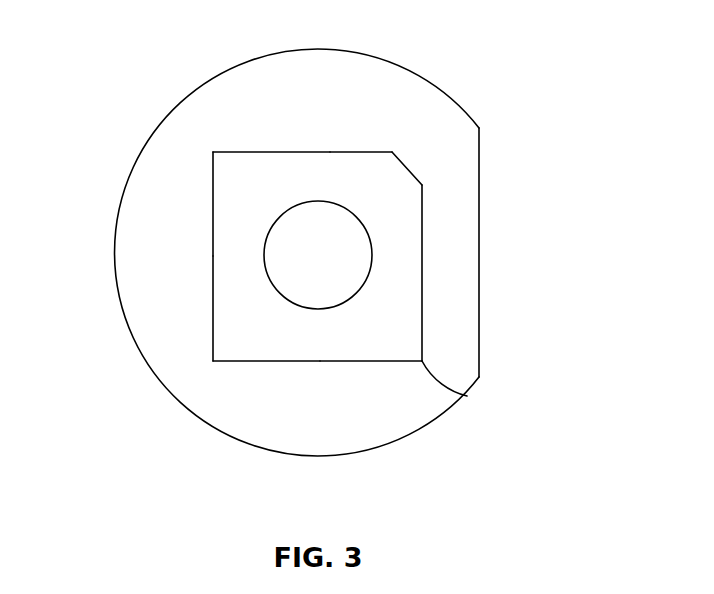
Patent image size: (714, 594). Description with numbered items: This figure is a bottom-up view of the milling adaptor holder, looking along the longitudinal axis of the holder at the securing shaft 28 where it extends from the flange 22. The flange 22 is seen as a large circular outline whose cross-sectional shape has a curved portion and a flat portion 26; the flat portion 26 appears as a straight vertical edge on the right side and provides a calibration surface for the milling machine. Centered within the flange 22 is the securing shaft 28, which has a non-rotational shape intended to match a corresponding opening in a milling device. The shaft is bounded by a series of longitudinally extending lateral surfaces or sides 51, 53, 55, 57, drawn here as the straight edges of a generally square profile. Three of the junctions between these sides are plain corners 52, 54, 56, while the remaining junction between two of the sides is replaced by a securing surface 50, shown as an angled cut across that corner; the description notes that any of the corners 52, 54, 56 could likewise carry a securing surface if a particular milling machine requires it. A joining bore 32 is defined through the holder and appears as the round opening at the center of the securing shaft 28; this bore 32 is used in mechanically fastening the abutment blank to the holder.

The flange 22 is at (132, 175).
The flat portion 26 is at (480, 293).
The securing shaft 28 is at (324, 152).
The joining bore 32 is at (328, 285).
The securing surface 50 is at (408, 167).
The longitudinally extending lateral side 51 is at (423, 220).
The corner 52 is at (467, 396).
The longitudinally extending lateral side 53 is at (372, 152).
The corner 54 is at (213, 361).
The longitudinally extending lateral side 55 is at (213, 283).
The corner 56 is at (213, 152).
The longitudinally extending lateral side 57 is at (372, 361).